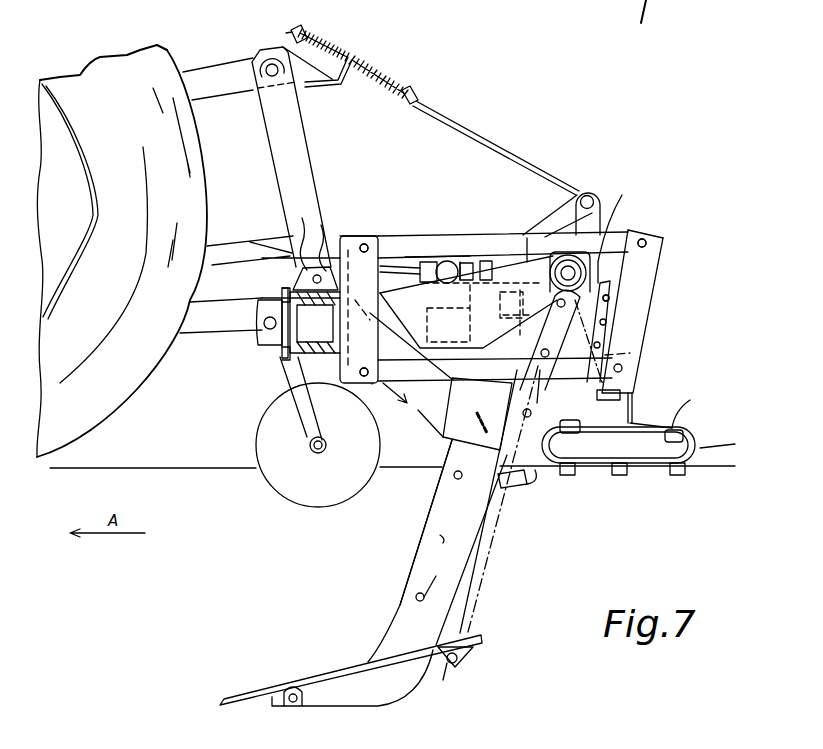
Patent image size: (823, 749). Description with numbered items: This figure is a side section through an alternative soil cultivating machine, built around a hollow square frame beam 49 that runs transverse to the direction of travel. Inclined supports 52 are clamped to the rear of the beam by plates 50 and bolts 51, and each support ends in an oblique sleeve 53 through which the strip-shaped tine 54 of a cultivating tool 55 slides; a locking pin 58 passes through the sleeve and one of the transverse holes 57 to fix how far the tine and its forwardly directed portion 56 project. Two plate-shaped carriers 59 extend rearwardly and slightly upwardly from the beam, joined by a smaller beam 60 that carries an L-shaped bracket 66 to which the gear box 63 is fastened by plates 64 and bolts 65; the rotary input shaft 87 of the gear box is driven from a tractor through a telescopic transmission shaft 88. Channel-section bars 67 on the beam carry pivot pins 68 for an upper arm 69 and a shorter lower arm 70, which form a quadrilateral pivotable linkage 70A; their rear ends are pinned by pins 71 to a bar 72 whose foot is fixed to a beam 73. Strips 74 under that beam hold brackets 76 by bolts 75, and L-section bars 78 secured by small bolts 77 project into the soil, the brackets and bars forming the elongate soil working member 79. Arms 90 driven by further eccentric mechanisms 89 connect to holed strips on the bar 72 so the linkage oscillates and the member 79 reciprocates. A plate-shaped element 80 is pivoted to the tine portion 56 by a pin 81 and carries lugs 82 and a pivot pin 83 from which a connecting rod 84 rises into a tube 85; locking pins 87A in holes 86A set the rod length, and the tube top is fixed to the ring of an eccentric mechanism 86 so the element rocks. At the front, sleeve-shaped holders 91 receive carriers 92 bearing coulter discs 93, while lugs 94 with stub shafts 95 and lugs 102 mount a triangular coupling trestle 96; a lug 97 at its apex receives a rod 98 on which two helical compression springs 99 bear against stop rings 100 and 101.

The frame beam 49 is at (262, 348).
The plates 50 is at (359, 309).
The bolts 51 is at (368, 384).
The supports 52 is at (413, 410).
The sleeve 53 is at (411, 454).
The tine 54 is at (437, 551).
The cultivating tool 55 is at (388, 604).
The forwardly directed portion 56 is at (378, 688).
The transverse holes 57 is at (429, 568).
The locking pins 58 is at (476, 428).
The carriers 59 is at (428, 262).
The beam 60 is at (461, 318).
The gear box 63 is at (557, 240).
The plates 64 is at (585, 190).
The bolts 65 is at (545, 222).
The bracket 66 is at (468, 315).
The bars 67 is at (346, 240).
The pivot pins 68 is at (370, 244).
The upper arm 69 is at (470, 250).
The lower arm 70 is at (532, 320).
The pivotable linkages 70A is at (414, 232).
The pins 71 is at (652, 232).
The bars 72 is at (641, 230).
The beam 73 is at (640, 410).
The oblong strips 74 is at (676, 422).
The bolts 75 is at (690, 406).
The brackets 76 is at (692, 440).
The small bolts 77 is at (618, 440).
The bars 78 is at (672, 478).
The soil working member 79 is at (712, 454).
The plate-shaped elements 80 is at (330, 676).
The pin 81 is at (290, 690).
The lugs 82 is at (468, 652).
The pivot pin 83 is at (444, 676).
The connecting rod 84 is at (490, 548).
The tube 85 is at (544, 492).
The eccentric mechanism 86 is at (616, 229).
The holes 86A is at (605, 325).
The rotary input shaft 87 is at (490, 262).
The locking pins 87A is at (545, 497).
The telescopic transmission shaft 88 is at (222, 242).
The further eccentric mechanisms 89 is at (650, 246).
The arms 90 is at (612, 302).
The sleeve-shaped holders 91 is at (260, 302).
The carriers 92 is at (278, 378).
The coulter discs 93 is at (257, 430).
The lugs 94 is at (327, 262).
The stub shafts 95 is at (316, 240).
The coupling member or trestle 96 is at (262, 116).
The lug 97 is at (348, 52).
The rod 98 is at (290, 28).
The helical compression springs 99 is at (325, 40).
The stop ring 100 is at (419, 93).
The stop ring 101 is at (306, 29).
The lugs 102 is at (258, 317).